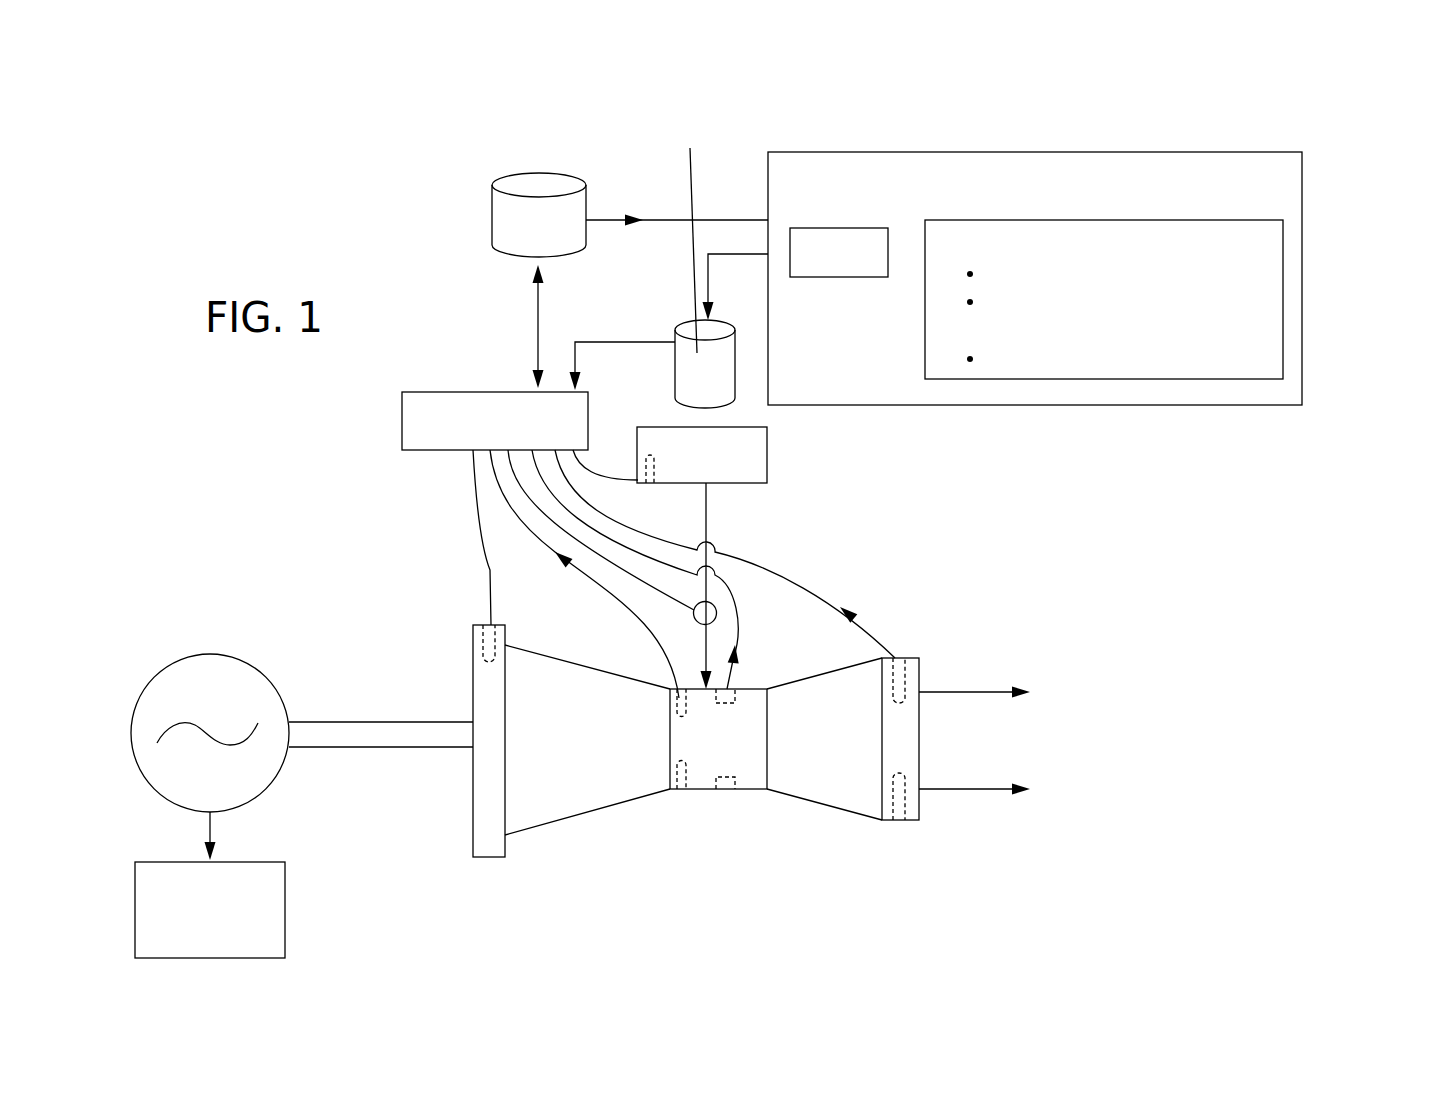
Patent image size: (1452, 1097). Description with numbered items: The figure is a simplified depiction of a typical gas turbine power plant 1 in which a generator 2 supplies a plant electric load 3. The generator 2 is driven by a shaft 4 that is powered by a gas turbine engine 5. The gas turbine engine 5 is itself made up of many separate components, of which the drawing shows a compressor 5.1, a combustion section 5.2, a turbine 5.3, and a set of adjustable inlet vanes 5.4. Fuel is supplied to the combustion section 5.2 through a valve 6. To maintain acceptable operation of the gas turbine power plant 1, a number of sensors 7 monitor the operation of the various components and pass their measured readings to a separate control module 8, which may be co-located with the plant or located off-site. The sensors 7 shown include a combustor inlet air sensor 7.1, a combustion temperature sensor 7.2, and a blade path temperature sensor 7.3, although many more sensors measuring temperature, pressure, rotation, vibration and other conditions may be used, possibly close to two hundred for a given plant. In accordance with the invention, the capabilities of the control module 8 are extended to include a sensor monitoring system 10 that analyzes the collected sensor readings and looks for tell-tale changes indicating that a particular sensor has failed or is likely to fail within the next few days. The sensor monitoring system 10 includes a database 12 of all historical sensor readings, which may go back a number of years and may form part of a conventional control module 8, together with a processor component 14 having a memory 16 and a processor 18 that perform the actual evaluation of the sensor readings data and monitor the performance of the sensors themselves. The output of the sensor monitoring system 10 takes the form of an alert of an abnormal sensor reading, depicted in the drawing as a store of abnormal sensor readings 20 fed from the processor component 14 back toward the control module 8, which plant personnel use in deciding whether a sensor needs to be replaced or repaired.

The gas turbine power plant 1 is at (256, 478).
The generator 2 is at (160, 668).
The plant electric load 3 is at (285, 903).
The shaft 4 is at (426, 748).
The gas turbine engine 5 is at (840, 544).
The compressor 5.1 is at (568, 795).
The combustion section 5.2 is at (741, 773).
The turbine 5.3 is at (898, 791).
The adjustable inlet vanes 5.4 is at (519, 773).
The valve 6 is at (717, 613).
The sensors 7 is at (505, 630).
The combustor inlet air sensor 7.1 is at (692, 789).
The combustion temperature sensor 7.2 is at (736, 694).
The blade path temperature sensor 7.3 is at (907, 802).
The control module 8 is at (478, 392).
The sensor monitoring system 10 is at (1410, 110).
The database 12 is at (498, 232).
The processor component 14 is at (1059, 156).
The memory 16 is at (842, 277).
The processor 18 is at (1133, 220).
The abnormal sensor readings data store 20 is at (690, 373).